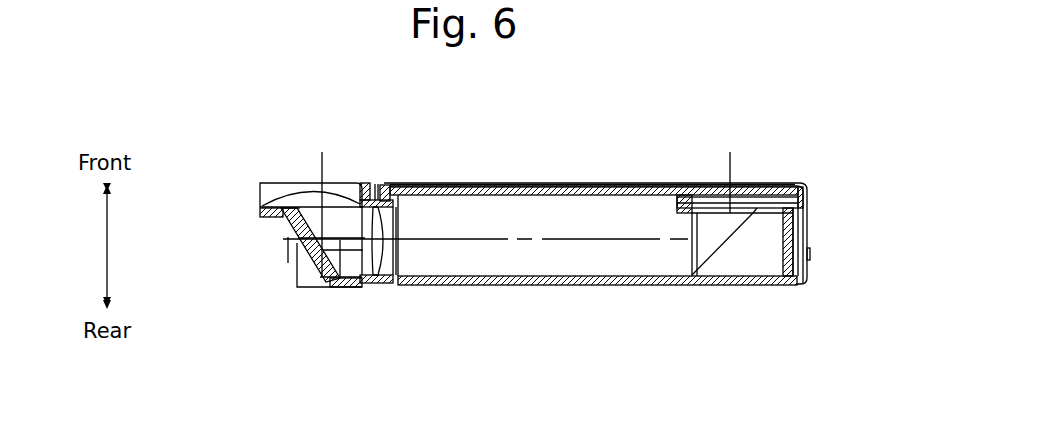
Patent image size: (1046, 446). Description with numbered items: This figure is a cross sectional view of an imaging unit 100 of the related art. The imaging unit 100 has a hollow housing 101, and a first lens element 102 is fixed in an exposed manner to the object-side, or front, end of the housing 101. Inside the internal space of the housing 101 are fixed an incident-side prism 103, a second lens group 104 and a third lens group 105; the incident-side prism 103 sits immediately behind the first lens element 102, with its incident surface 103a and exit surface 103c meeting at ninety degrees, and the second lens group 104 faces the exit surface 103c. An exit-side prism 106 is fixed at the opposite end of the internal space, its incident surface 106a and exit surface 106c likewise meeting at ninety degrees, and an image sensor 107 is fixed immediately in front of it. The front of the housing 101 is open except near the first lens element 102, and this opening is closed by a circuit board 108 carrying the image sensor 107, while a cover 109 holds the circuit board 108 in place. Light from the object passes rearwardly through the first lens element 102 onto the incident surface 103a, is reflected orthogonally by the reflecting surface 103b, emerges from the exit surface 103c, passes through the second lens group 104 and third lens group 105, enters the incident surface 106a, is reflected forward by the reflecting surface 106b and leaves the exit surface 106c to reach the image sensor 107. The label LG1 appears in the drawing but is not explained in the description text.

The imaging unit 100 is at (253, 149).
The hollow housing 101 is at (567, 285).
The first lens element 102 is at (260, 201).
The incident-side prism 103 is at (290, 262).
The incident surface 103a is at (345, 185).
The reflecting surface 103b is at (328, 226).
The exit surface 103c is at (352, 250).
The second lens group 104 is at (362, 252).
The third lens group 105 is at (374, 252).
The exit-side prism 106 is at (712, 247).
The incident surface 106a is at (692, 258).
The reflecting surface 106b is at (725, 248).
The exit surface 106c is at (738, 203).
The image sensor 107 is at (748, 205).
The circuit board 108 is at (606, 184).
The cover 109 is at (537, 183).
The first lens group LG1 is at (355, 407).